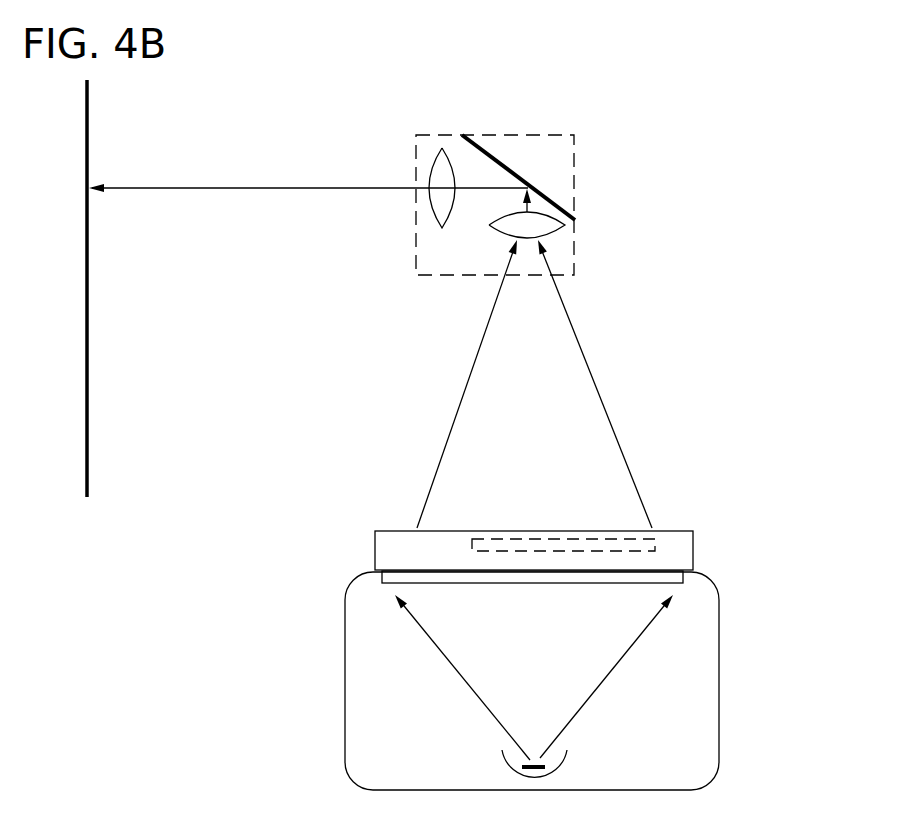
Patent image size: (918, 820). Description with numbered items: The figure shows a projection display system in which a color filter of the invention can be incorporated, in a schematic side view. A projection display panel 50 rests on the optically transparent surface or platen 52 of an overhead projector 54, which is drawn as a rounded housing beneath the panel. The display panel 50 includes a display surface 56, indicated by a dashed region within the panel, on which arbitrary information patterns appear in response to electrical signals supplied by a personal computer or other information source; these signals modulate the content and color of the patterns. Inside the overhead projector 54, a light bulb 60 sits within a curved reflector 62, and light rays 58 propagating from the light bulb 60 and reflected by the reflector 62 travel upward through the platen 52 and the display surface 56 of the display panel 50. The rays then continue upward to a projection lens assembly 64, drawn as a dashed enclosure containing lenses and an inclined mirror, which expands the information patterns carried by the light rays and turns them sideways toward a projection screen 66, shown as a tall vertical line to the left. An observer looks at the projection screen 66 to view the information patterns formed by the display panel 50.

The projection display panel 50 is at (702, 528).
The platen 52 is at (505, 584).
The overhead projector 54 is at (730, 646).
The display surface 56 is at (552, 530).
The light rays 58 is at (565, 723).
The light bulb 60 is at (547, 760).
The reflector 62 is at (557, 773).
The projection lens assembly 64 is at (552, 231).
The projection screen 66 is at (88, 447).